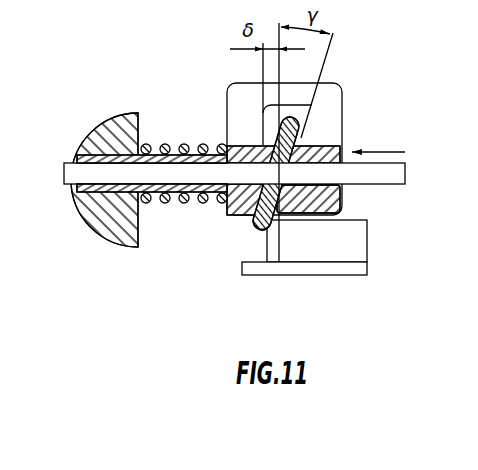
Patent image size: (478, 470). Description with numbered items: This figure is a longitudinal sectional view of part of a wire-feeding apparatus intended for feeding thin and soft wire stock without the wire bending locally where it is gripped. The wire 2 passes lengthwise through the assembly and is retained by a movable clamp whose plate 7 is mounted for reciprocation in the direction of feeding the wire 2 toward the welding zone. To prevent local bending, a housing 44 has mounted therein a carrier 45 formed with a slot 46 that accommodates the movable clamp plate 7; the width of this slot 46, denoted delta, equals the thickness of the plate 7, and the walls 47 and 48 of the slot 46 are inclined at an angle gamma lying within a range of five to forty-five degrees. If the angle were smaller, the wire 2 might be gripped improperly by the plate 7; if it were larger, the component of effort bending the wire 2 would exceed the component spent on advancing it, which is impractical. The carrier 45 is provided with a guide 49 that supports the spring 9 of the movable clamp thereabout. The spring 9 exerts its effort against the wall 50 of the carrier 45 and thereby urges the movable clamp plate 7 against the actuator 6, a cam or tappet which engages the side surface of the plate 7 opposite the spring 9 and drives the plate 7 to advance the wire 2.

The wire 2 is at (383, 184).
The actuator 6 is at (357, 247).
The plate 7 is at (252, 228).
The spring 9 is at (164, 140).
The housing 44 is at (110, 230).
The carrier 45 is at (327, 96).
The slot 46 is at (268, 131).
The wall 47 is at (303, 133).
The wall 48 is at (248, 203).
The guide 49 is at (93, 213).
The wall 50 is at (227, 103).